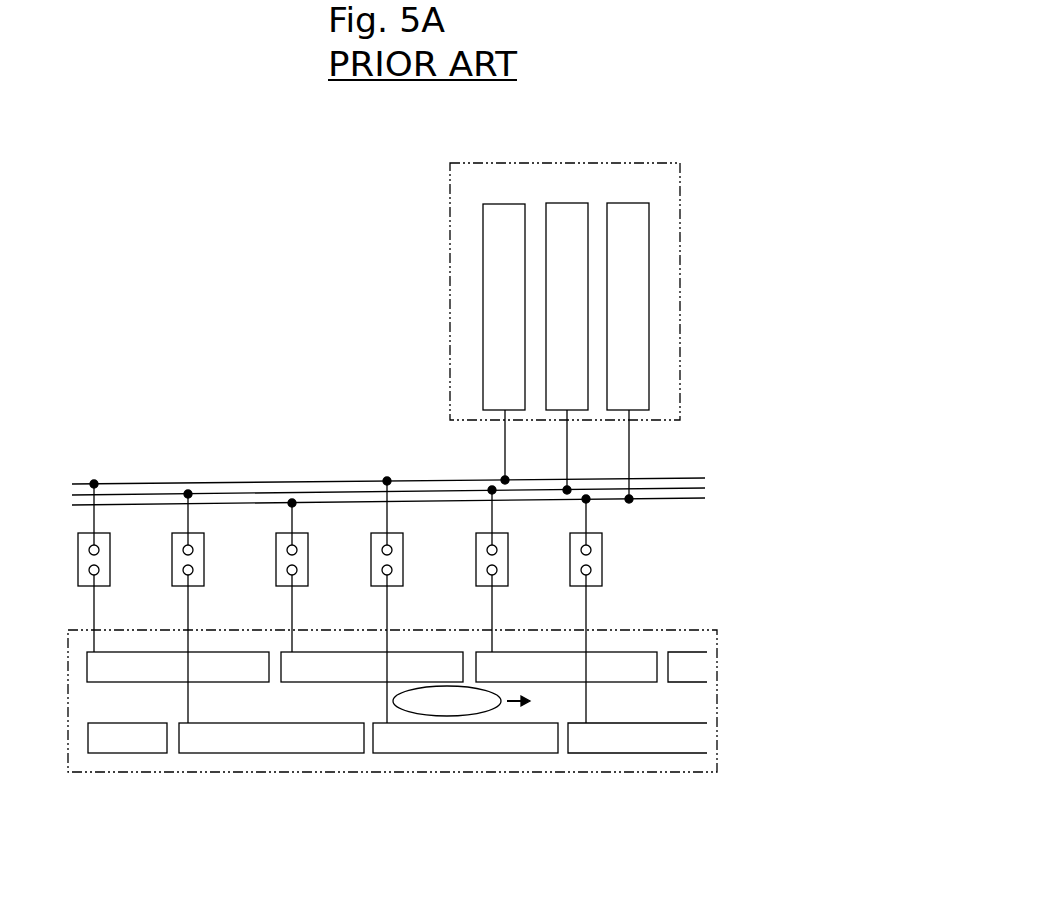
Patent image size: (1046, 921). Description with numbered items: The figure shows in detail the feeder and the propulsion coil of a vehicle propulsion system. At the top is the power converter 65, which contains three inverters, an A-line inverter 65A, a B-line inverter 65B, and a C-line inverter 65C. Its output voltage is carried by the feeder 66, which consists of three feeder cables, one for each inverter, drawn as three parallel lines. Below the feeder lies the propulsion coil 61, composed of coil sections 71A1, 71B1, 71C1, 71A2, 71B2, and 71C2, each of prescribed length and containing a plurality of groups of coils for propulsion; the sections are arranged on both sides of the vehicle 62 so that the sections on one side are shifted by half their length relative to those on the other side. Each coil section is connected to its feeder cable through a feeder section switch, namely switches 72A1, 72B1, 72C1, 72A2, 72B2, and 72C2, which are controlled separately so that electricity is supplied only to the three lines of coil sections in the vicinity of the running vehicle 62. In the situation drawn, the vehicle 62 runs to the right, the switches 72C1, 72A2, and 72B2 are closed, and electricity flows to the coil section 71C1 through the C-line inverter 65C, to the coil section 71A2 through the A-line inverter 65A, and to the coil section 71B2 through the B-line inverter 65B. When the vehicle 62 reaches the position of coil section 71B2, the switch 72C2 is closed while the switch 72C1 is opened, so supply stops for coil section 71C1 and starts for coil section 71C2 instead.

The power converter 65 is at (604, 162).
The A-line inverter 65A is at (483, 385).
The B-line inverter 65B is at (572, 420).
The C-line inverter 65C is at (650, 381).
The feeder 66 is at (713, 470).
The propulsion coil 61 is at (683, 630).
The vehicle 62 is at (412, 716).
The feeder section switch 72A1 is at (111, 563).
The feeder section switch 72B1 is at (205, 563).
The feeder section switch 72C1 is at (309, 563).
The feeder section switch 72A2 is at (404, 563).
The feeder section switch 72B2 is at (509, 563).
The feeder section switch 72C2 is at (603, 563).
The coil section 71A1 is at (105, 683).
The coil section 71B1 is at (235, 723).
The coil section 71C1 is at (300, 683).
The coil section 71A2 is at (552, 723).
The coil section 71B2 is at (600, 682).
The coil section 71C2 is at (672, 723).